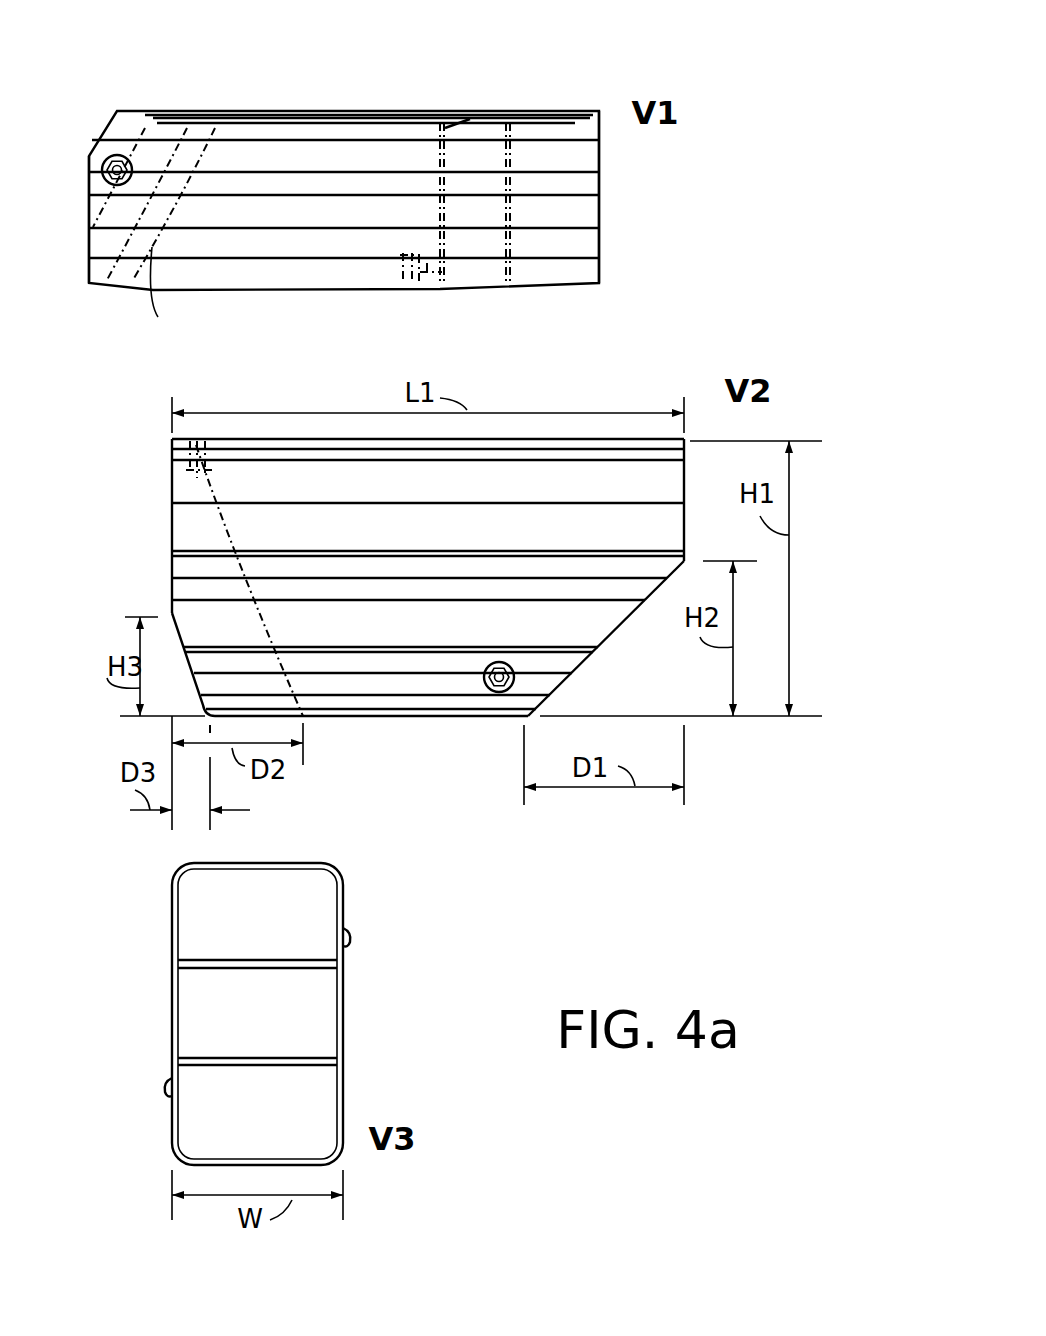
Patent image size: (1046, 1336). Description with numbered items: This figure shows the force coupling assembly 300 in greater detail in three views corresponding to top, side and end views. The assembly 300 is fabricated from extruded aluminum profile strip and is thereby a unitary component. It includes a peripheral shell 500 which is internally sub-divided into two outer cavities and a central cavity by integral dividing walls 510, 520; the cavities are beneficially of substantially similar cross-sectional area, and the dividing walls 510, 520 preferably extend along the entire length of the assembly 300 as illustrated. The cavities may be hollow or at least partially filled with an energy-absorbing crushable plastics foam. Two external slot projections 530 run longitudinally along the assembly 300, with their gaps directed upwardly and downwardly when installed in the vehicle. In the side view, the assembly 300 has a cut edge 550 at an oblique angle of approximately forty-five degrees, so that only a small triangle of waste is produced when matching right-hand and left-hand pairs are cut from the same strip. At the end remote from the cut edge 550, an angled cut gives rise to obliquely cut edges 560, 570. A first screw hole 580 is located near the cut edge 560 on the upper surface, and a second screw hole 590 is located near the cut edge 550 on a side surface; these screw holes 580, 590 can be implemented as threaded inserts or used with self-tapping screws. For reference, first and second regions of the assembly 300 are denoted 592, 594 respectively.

The coupling assembly 300 is at (708, 282).
The peripheral shell 500 is at (165, 930).
The dividing wall 510 is at (200, 965).
The dividing wall 520 is at (205, 1062).
The external slot projection 530 is at (352, 945).
The cut edge 550 is at (438, 157).
The obliquely cut edge 560 is at (107, 203).
The obliquely cut edge 570 is at (122, 247).
The first screw hole 580 is at (106, 160).
The second screw hole 590 is at (415, 292).
The first region 592 is at (87, 247).
The second region 594 is at (599, 243).